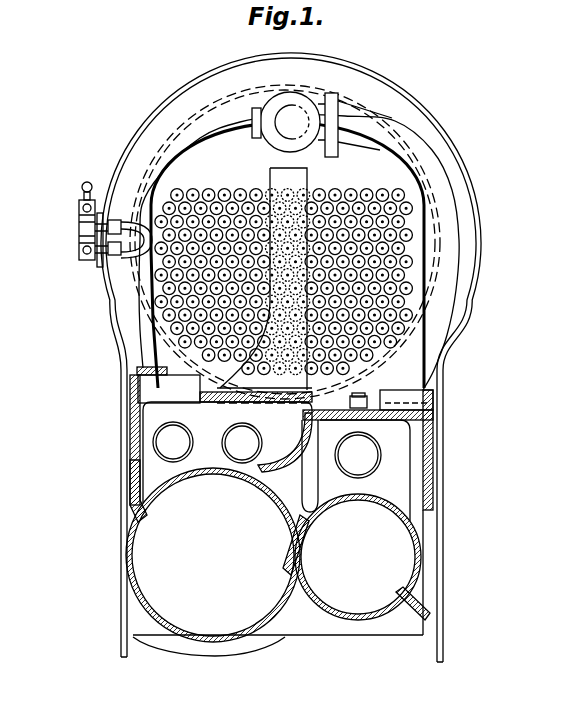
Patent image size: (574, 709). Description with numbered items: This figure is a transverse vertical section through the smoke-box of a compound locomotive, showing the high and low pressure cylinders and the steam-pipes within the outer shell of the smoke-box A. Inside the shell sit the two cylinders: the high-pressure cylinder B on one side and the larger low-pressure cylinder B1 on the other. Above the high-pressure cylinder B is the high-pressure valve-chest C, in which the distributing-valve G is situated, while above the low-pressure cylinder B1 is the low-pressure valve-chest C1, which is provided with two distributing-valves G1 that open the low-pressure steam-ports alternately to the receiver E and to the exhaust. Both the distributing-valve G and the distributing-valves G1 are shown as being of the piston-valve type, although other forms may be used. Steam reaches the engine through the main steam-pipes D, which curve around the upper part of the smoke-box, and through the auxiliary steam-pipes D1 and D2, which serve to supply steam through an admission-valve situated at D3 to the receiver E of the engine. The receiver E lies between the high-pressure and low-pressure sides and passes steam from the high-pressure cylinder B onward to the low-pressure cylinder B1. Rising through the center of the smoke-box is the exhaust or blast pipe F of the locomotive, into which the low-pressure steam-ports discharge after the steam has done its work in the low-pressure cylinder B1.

The shell of the smoke-box A is at (146, 126).
The high-pressure cylinder B is at (402, 532).
The low-pressure cylinder B1 is at (132, 512).
The high-pressure valve-chest C is at (410, 450).
The low-pressure valve-chest C1 is at (180, 400).
The main steam-pipes D is at (389, 156).
The auxiliary steam-pipe D1 is at (184, 157).
The auxiliary steam-pipe D2 is at (147, 286).
The admission-valve location D3 is at (79, 235).
The receiver E is at (229, 439).
The exhaust or blast pipe F is at (270, 178).
The distributing-valve G is at (358, 455).
The distributing-valves G1 is at (173, 442).